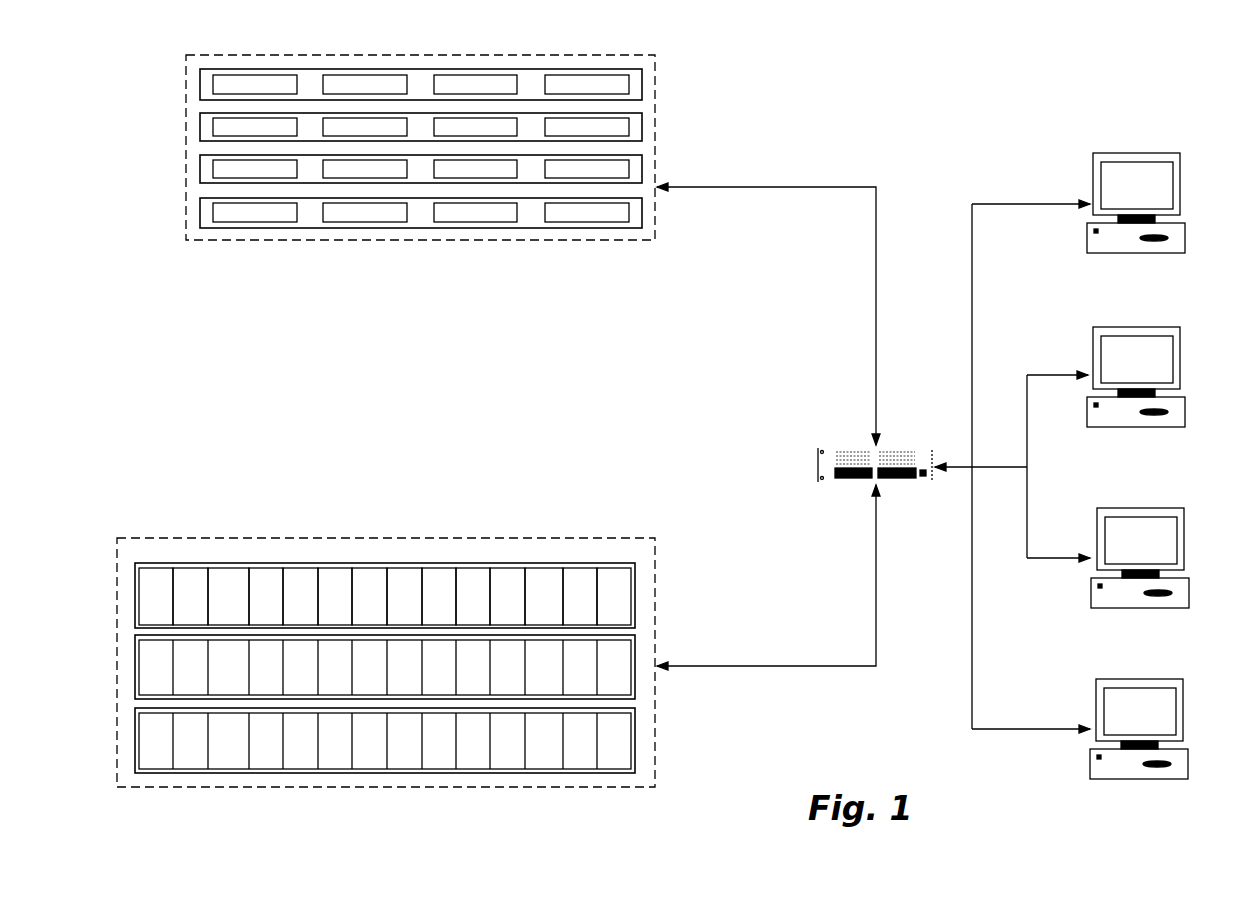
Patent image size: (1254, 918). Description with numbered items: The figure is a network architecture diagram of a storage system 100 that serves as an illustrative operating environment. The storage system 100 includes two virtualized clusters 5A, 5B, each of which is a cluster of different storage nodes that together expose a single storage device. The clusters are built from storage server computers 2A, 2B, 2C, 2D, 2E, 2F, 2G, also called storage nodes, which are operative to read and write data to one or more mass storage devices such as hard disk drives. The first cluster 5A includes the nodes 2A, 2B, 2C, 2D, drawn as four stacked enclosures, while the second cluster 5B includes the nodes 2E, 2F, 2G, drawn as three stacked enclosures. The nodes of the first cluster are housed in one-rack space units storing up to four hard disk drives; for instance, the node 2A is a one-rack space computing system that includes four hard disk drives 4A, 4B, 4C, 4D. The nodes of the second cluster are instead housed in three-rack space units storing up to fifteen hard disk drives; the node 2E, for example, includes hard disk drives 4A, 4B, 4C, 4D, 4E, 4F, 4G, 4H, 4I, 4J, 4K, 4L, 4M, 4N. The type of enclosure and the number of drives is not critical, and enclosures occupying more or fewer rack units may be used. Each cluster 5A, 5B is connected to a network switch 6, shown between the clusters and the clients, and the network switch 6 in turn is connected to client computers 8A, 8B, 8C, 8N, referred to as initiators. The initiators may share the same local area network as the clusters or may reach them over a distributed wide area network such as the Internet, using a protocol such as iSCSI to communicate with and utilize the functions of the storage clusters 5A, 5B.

The storage system 100 is at (940, 131).
The virtualized cluster 5A is at (650, 83).
The virtualized cluster 5B is at (647, 562).
The storage server computer 2A is at (634, 94).
The storage server computer 2B is at (634, 136).
The storage server computer 2C is at (634, 178).
The storage server computer 2D is at (634, 223).
The storage server computer 2E is at (632, 622).
The storage server computer 2F is at (632, 692).
The storage server computer 2G is at (632, 766).
The hard disk drive 4A is at (144, 604).
The hard disk drive 4B is at (178, 604).
The hard disk drive 4C is at (216, 604).
The hard disk drive 4D is at (254, 604).
The hard disk drive 4E is at (288, 604).
The hard disk drive 4F is at (323, 604).
The hard disk drive 4G is at (382, 604).
The hard disk drive 4H is at (417, 604).
The hard disk drive 4I is at (430, 604).
The hard disk drive 4J is at (462, 604).
The hard disk drive 4K is at (520, 604).
The hard disk drive 4L is at (555, 604).
The hard disk drive 4M is at (594, 604).
The hard disk drive 4N is at (627, 604).
The network switch 6 is at (920, 481).
The client computer 8A is at (1170, 248).
The client computer 8B is at (1172, 422).
The client computer 8C is at (1176, 603).
The client computer 8N is at (1175, 774).